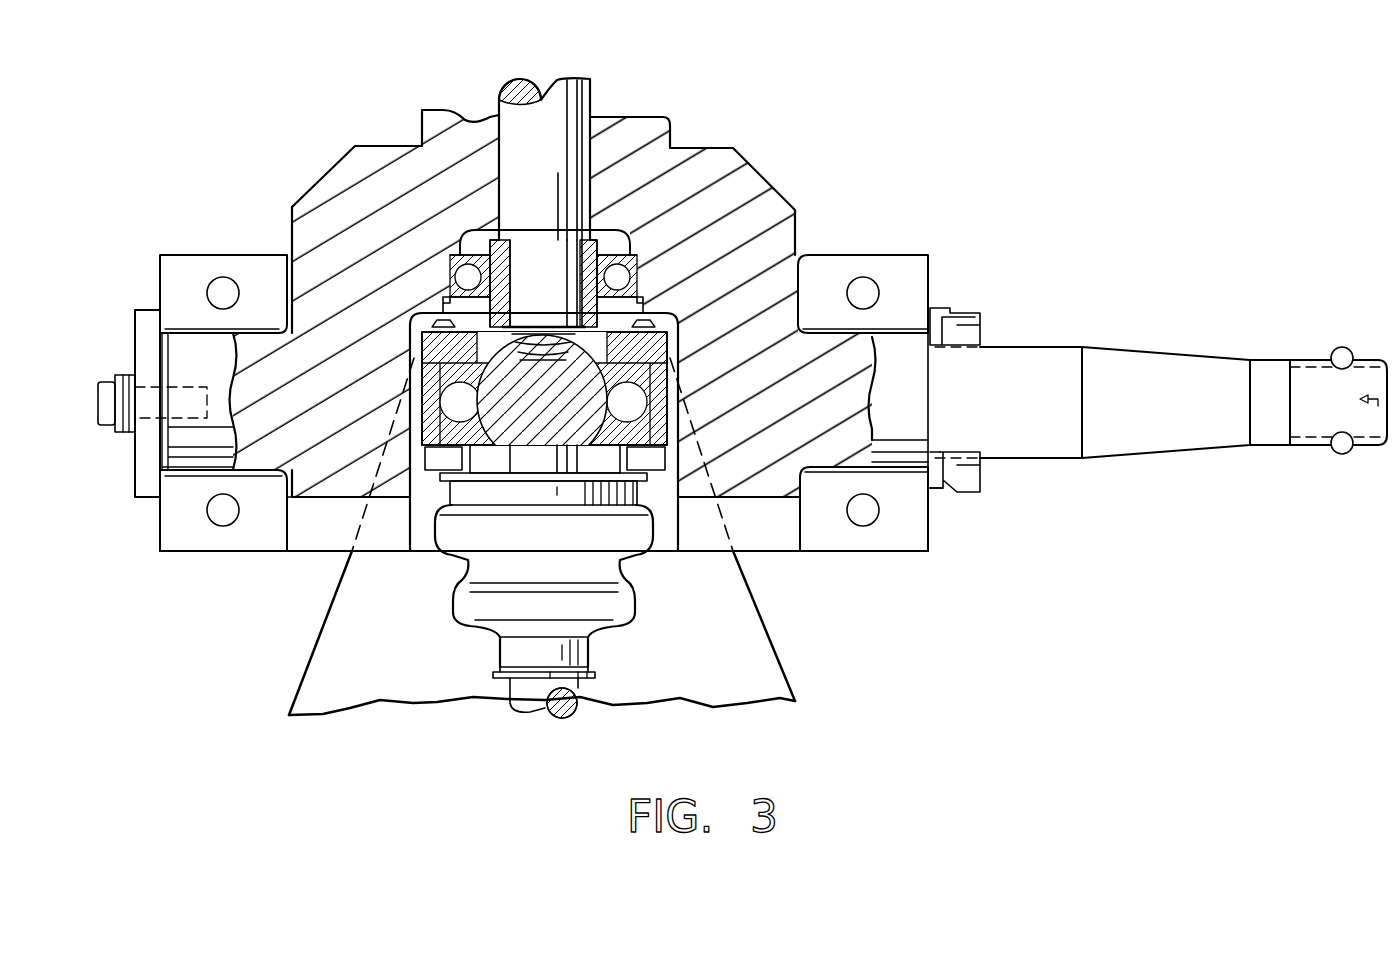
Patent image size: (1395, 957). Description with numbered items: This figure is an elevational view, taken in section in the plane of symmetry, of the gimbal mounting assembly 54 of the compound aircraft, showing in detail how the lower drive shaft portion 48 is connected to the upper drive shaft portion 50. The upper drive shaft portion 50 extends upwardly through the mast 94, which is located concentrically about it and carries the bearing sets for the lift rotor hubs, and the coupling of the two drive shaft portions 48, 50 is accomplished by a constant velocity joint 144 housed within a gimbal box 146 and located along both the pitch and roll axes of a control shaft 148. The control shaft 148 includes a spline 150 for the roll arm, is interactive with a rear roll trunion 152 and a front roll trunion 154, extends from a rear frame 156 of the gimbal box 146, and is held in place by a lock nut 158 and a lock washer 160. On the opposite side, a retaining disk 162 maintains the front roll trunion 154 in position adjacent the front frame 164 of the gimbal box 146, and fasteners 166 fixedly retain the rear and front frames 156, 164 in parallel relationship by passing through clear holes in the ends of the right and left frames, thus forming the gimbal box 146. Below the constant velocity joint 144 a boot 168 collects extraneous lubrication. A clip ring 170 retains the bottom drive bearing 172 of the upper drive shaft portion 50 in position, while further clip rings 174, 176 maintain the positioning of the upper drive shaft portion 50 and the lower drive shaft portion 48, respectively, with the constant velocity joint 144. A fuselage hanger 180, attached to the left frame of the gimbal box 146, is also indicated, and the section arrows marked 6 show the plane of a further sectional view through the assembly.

The section line 6- 6 is at (112, 40).
The lower drive shaft portion 48 is at (522, 712).
The upper drive shaft portion 50 is at (566, 78).
The gimbal mounting assembly 54 is at (927, 364).
The mast 94 is at (760, 173).
The constant velocity joint 144 is at (660, 370).
The gimbal box 146 is at (932, 269).
The control shaft 148 is at (1135, 347).
The spline 150 is at (1307, 440).
The rear roll trunion 152 is at (919, 392).
The front roll trunion 154 is at (222, 370).
The rear frame 156 is at (930, 280).
The lock nut 158 is at (980, 493).
The lock washer 160 is at (957, 493).
The retaining disk 162 is at (216, 377).
The front frame 164 is at (215, 287).
The fasteners 166 is at (227, 292).
The boot 168 is at (633, 614).
The clip ring 170 is at (445, 294).
The bottom drive bearing 172 is at (467, 275).
The clip ring 174 is at (505, 330).
The clip ring 176 is at (498, 325).
The fuselage hanger 180 is at (782, 660).